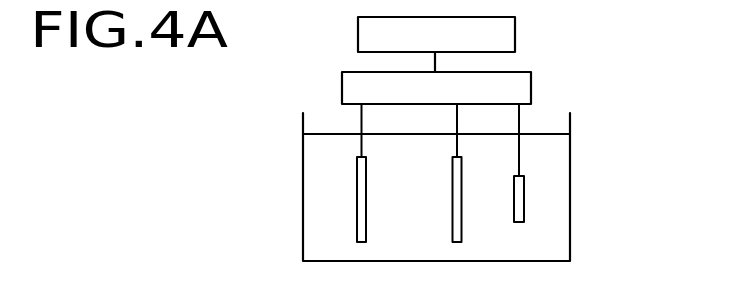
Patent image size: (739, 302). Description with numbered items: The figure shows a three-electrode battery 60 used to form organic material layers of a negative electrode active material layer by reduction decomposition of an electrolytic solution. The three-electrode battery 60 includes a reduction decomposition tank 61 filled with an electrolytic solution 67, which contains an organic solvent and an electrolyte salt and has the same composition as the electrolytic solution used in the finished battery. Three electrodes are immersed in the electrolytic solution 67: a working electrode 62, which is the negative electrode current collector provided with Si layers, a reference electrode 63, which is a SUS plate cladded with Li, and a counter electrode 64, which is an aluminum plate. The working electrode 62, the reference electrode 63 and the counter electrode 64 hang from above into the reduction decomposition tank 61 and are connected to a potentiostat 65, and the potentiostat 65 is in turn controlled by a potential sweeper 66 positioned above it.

The three-electrode battery 60 is at (442, 179).
The reduction decomposition tank 61 is at (572, 120).
The working electrode 62 is at (451, 175).
The reference electrode 63 is at (519, 205).
The counter electrode 64 is at (366, 219).
The potentiostat 65 is at (525, 88).
The potential sweeper 66 is at (510, 33).
The electrolytic solution 67 is at (553, 186).